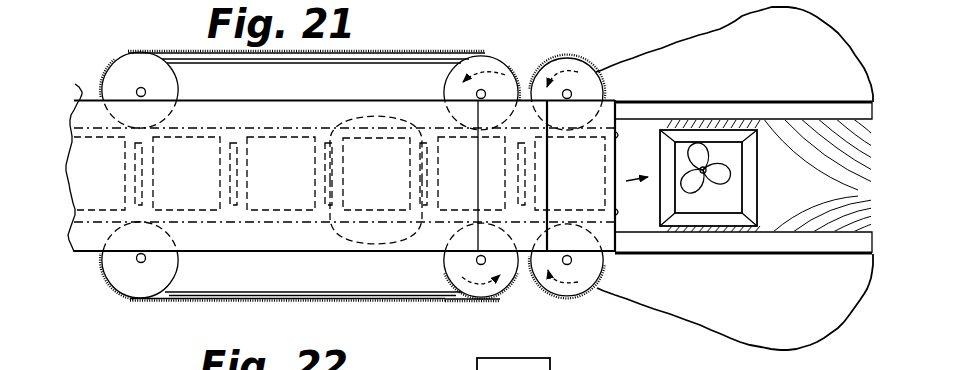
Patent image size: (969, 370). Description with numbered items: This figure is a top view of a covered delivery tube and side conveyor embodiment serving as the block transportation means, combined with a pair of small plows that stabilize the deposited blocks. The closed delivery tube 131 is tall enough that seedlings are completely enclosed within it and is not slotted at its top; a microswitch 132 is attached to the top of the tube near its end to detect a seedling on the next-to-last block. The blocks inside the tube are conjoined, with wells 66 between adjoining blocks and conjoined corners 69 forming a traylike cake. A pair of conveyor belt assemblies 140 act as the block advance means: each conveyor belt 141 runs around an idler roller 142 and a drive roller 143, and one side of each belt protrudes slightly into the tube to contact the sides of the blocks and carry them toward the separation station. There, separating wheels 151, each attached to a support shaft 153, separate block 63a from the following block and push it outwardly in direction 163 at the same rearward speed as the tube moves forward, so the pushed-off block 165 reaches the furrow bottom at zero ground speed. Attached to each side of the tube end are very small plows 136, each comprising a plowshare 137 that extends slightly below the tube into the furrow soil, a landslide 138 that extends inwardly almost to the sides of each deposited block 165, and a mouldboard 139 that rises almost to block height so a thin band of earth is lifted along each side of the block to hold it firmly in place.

In FIG. 21, the closed delivery tube 131 is at (65, 160).
In FIG. 21, the microswitch 132 is at (511, 187).
In FIG. 22, the microswitch 132 is at (552, 368).
In FIG. 21, the plow 136 is at (722, 42).
In FIG. 21, the plowshare 137 is at (452, 284).
In FIG. 21, the landslide 138 is at (739, 279).
In FIG. 21, the mouldboard 139 is at (800, 338).
In FIG. 21, the conveyor belt assembly 140 is at (198, 301).
In FIG. 21, the conveyor belt 141 is at (302, 61).
In FIG. 21, the idler roller 142 is at (170, 88).
In FIG. 21, the drive roller 143 is at (495, 62).
In FIG. 21, the separating wheel 151 is at (560, 62).
In FIG. 21, the support shaft 153 is at (570, 91).
In FIG. 21, the direction 163 is at (637, 191).
In FIG. 21, the pushed-off block 165 is at (757, 182).
In FIG. 21, the block 63a is at (605, 166).
In FIG. 21, the well 66 is at (376, 214).
In FIG. 21, the conjoined corner 69 is at (376, 144).